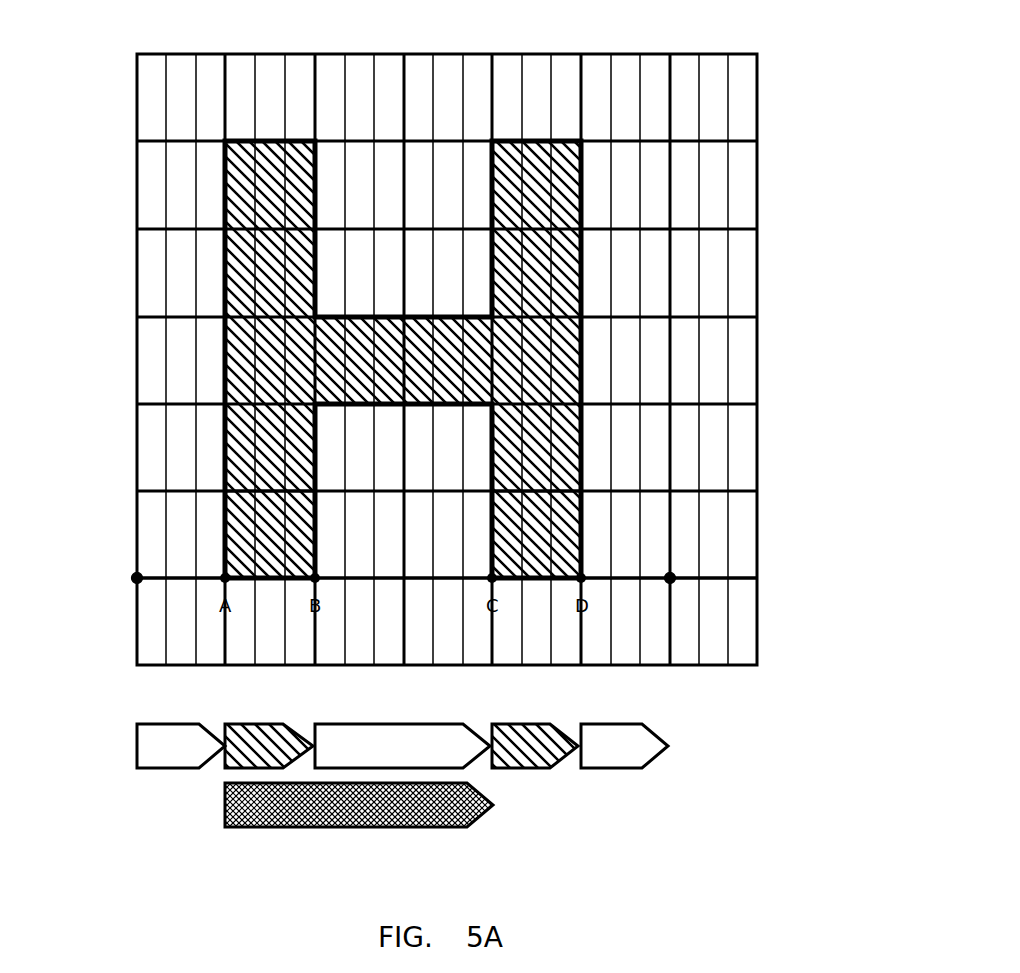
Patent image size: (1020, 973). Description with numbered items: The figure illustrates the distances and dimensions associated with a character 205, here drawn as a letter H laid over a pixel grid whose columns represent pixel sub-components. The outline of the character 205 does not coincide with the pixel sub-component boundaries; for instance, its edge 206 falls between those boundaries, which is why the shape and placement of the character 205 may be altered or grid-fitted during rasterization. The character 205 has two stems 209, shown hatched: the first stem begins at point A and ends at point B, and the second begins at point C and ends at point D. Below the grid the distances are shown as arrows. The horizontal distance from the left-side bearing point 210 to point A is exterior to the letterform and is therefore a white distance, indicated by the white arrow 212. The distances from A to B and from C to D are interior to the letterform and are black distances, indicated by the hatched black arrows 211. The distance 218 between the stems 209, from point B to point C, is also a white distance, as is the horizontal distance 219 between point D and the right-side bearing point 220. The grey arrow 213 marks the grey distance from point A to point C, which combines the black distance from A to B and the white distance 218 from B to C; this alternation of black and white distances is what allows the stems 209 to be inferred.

The character 205 is at (421, 312).
The edge 206 is at (225, 372).
The stems 209 is at (262, 537).
The left-side bearing point 210 is at (137, 578).
The right-side bearing point 220 is at (670, 578).
The white arrow 212 is at (140, 750).
The black arrows 211 is at (229, 764).
The distance between stems 218 is at (463, 762).
The horizontal distance 219 is at (645, 756).
The grey arrow 213 is at (306, 827).